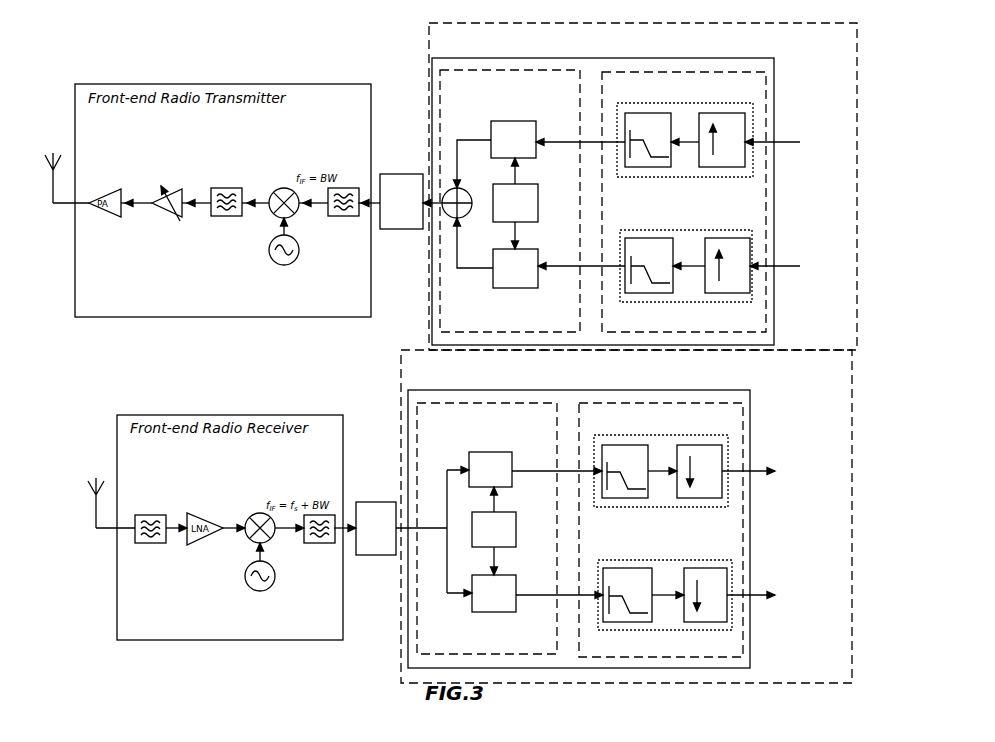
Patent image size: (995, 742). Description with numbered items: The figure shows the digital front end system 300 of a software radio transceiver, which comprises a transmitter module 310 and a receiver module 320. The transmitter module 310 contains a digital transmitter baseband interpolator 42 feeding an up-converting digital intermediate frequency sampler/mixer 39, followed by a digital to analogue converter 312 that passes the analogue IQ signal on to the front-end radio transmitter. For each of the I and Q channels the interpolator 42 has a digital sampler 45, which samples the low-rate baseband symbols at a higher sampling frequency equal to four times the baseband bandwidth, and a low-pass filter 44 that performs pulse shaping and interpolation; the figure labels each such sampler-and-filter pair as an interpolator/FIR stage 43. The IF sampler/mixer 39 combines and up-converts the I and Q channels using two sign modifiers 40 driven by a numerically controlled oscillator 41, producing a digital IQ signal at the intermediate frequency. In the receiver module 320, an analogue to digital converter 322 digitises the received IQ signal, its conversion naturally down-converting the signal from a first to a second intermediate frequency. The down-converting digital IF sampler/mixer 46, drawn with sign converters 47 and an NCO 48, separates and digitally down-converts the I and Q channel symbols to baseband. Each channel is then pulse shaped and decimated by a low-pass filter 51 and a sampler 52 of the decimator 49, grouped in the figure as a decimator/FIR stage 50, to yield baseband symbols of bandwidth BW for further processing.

The digital front end system 300 is at (410, 63).
The transmitter module 310 is at (775, 193).
The digital to analogue converter 312 is at (402, 174).
The receiver module 320 is at (743, 432).
The analogue to digital converter 322 is at (374, 495).
The up-converting digital intermediate frequency sampler/mixer 39 is at (501, 201).
The sign modifier 40 is at (513, 129).
The numerically controlled oscillator 41 is at (527, 203).
The digital transmitter baseband interpolator 42 is at (684, 202).
The interpolator/FIR block 43 is at (685, 160).
The low-pass filter 44 is at (648, 140).
The digital sampler 45 is at (722, 140).
The down-converting digital IF sampler/mixer 46 is at (487, 528).
The sign block (I path) 47 is at (490, 461).
The numerically controlled oscillator (NCO) 48 is at (505, 529).
The decimator 49 is at (661, 530).
The decimator/FIR block 50 is at (661, 490).
The low-pass filter 51 is at (625, 471).
The sampler 52 is at (699, 471).